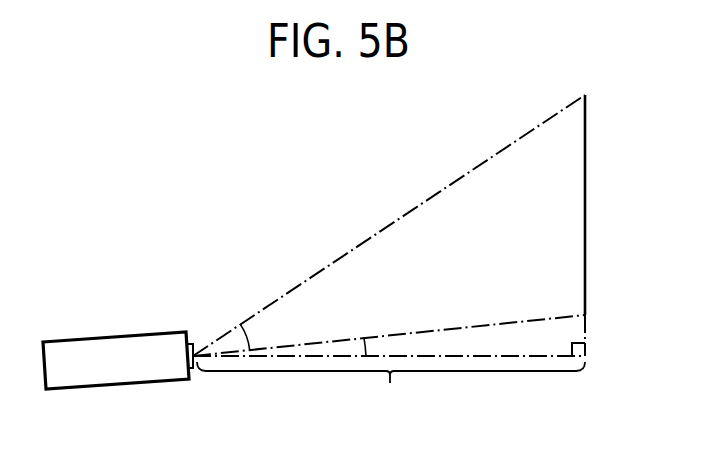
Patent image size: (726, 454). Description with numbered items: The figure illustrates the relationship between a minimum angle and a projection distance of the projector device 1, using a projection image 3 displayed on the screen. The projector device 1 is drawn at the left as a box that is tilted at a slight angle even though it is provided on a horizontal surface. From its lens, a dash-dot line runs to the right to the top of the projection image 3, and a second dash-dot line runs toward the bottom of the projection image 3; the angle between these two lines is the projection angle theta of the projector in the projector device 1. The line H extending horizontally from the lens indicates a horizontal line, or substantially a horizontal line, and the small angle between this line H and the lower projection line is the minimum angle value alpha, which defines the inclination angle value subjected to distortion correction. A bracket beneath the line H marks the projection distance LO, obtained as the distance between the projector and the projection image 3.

The projector device 1 is at (110, 336).
The projection image 3 is at (586, 178).
The horizontal line H is at (510, 357).
The projection distance LO is at (391, 389).